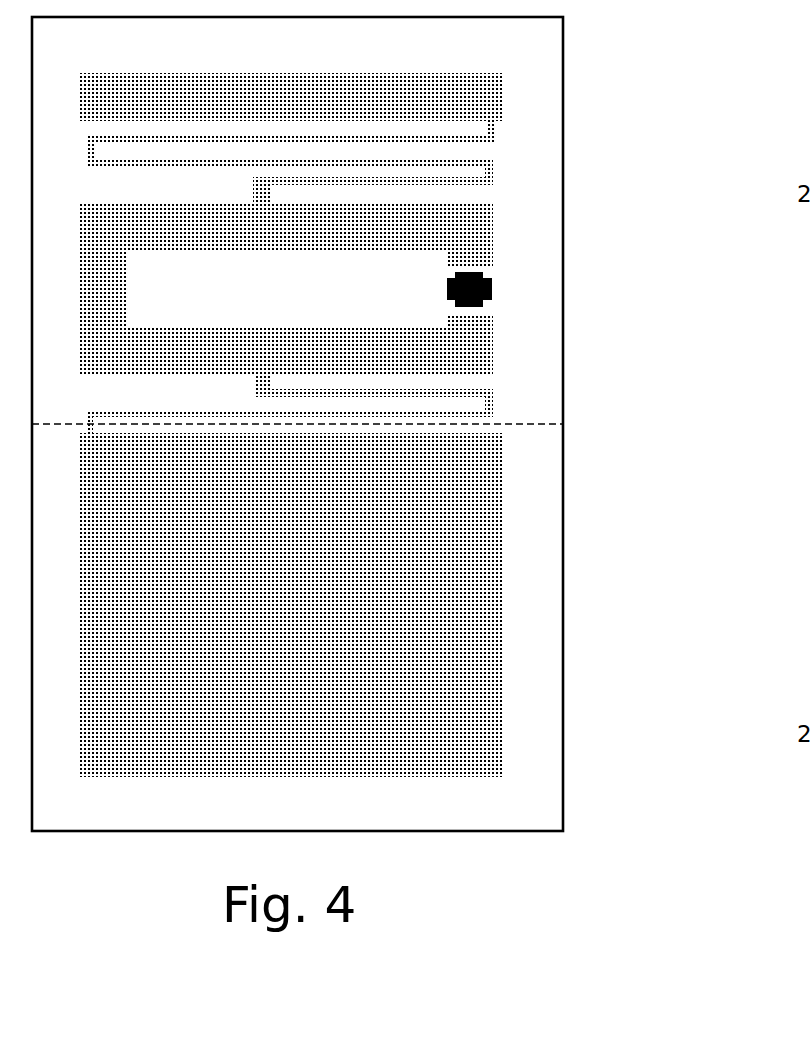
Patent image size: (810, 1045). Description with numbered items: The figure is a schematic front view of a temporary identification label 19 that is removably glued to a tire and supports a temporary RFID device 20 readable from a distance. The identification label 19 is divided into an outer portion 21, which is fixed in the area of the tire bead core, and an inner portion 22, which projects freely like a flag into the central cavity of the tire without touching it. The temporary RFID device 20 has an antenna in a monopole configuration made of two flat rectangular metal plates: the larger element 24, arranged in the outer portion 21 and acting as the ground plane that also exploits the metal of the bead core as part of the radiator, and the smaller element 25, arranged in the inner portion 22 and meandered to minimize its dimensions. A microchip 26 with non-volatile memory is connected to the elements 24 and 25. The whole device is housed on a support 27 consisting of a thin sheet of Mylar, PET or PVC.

The identification label 19 is at (688, 109).
The temporary RFID device 20 is at (672, 406).
The outer portion 21 is at (626, 613).
The inner portion 22 is at (612, 235).
The element 24 is at (440, 725).
The element 25 is at (452, 97).
The microchip 26 is at (492, 288).
The support 27 is at (61, 793).